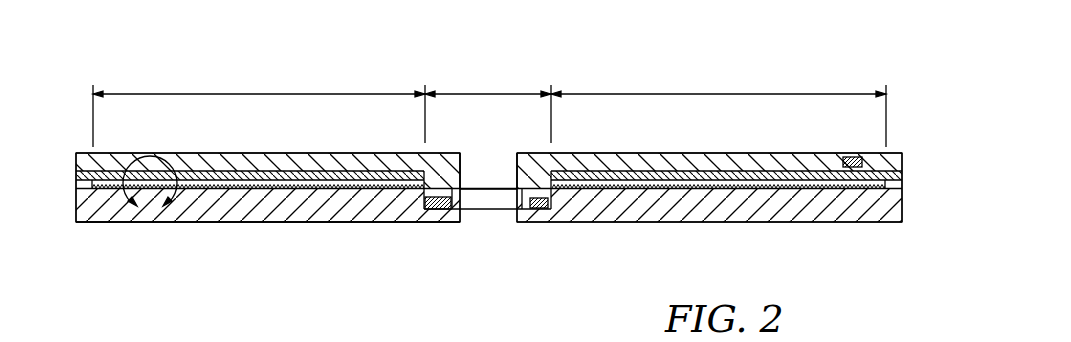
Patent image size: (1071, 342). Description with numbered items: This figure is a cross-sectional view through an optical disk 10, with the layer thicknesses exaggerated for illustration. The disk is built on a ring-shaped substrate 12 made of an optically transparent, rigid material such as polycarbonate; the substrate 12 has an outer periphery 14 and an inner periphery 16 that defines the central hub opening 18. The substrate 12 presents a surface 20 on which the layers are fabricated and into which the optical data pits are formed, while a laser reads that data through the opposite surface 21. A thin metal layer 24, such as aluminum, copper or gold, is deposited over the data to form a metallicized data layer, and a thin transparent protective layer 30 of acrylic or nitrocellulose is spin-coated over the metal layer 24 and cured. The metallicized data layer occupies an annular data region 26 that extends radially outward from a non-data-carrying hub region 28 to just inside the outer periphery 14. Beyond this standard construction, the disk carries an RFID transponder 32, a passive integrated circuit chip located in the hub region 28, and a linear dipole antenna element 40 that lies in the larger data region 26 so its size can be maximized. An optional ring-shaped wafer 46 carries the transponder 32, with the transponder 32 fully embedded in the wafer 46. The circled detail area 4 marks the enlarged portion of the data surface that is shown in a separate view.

The semiconductor package assembly 10 is at (668, 53).
The substrate body 12 is at (795, 212).
The side edge of substrate 14 is at (903, 200).
The bridge / web connecting portion 16 is at (512, 210).
The gap / opening between blocks 18 is at (488, 167).
The serrated interface (teeth) 20 is at (193, 189).
The bottom surface of substrate 21 is at (310, 222).
The intermediate layer 24 is at (229, 171).
The width dimension of block 26 is at (260, 94).
The width dimension of gap 28 is at (489, 94).
The top layer 30 is at (76, 178).
The conductor element in right recess 32 is at (543, 208).
The conductor element in top layer 40 is at (850, 157).
The conductor element in left recess 46 is at (438, 209).
The detail view indicator (FIG. 4) 4 is at (150, 189).